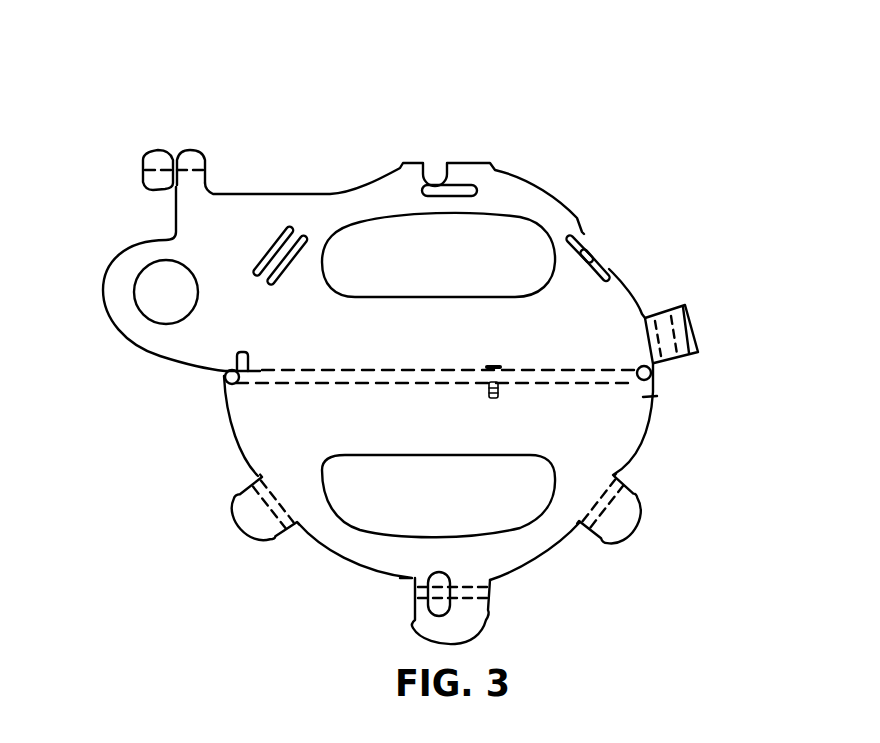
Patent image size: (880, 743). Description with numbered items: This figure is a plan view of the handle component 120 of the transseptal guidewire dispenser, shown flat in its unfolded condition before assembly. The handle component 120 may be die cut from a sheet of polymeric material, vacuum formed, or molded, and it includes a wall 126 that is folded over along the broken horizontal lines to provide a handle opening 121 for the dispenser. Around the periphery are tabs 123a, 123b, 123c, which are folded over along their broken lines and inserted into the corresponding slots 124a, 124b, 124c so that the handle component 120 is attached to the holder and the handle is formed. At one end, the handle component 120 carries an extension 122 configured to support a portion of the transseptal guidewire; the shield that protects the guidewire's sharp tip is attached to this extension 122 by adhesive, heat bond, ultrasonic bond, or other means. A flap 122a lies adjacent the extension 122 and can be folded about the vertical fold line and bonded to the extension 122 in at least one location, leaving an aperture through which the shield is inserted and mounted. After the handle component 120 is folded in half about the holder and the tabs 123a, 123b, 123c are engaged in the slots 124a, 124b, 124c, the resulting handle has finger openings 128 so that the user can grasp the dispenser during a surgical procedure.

The handle component 120 is at (597, 91).
The handle opening 121 is at (400, 228).
The extension 122 is at (116, 156).
The flap 122a is at (193, 152).
The tab 123a is at (245, 522).
The tab 123b is at (490, 612).
The tab 123c is at (640, 512).
The slot 124a is at (278, 240).
The slot 124b is at (458, 192).
The slot 124c is at (596, 251).
The wall 126 is at (652, 396).
The finger opening 128 is at (142, 297).